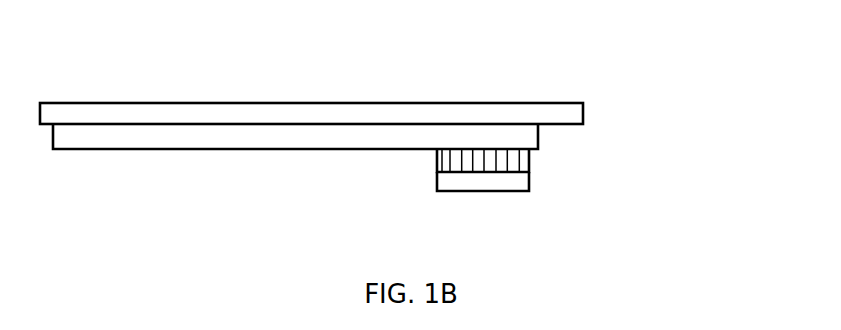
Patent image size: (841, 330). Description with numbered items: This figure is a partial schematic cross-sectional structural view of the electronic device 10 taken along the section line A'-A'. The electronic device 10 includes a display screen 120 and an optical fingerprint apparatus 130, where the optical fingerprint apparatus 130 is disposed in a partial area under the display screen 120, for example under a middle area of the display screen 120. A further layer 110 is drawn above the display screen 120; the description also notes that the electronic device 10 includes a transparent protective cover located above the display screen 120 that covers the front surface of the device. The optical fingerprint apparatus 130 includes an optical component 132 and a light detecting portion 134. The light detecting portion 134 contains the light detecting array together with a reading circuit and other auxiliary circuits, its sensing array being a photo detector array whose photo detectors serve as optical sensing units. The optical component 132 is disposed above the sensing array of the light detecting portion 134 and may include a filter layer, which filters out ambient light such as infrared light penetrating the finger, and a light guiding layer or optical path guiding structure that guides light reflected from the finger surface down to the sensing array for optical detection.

The electronic device 10 is at (302, 44).
The first substrate 110 is at (550, 103).
The display screen 120 is at (323, 150).
The optical fingerprint apparatus 130 is at (585, 186).
The optical component 132 is at (529, 161).
The light detecting portion 134 is at (529, 183).